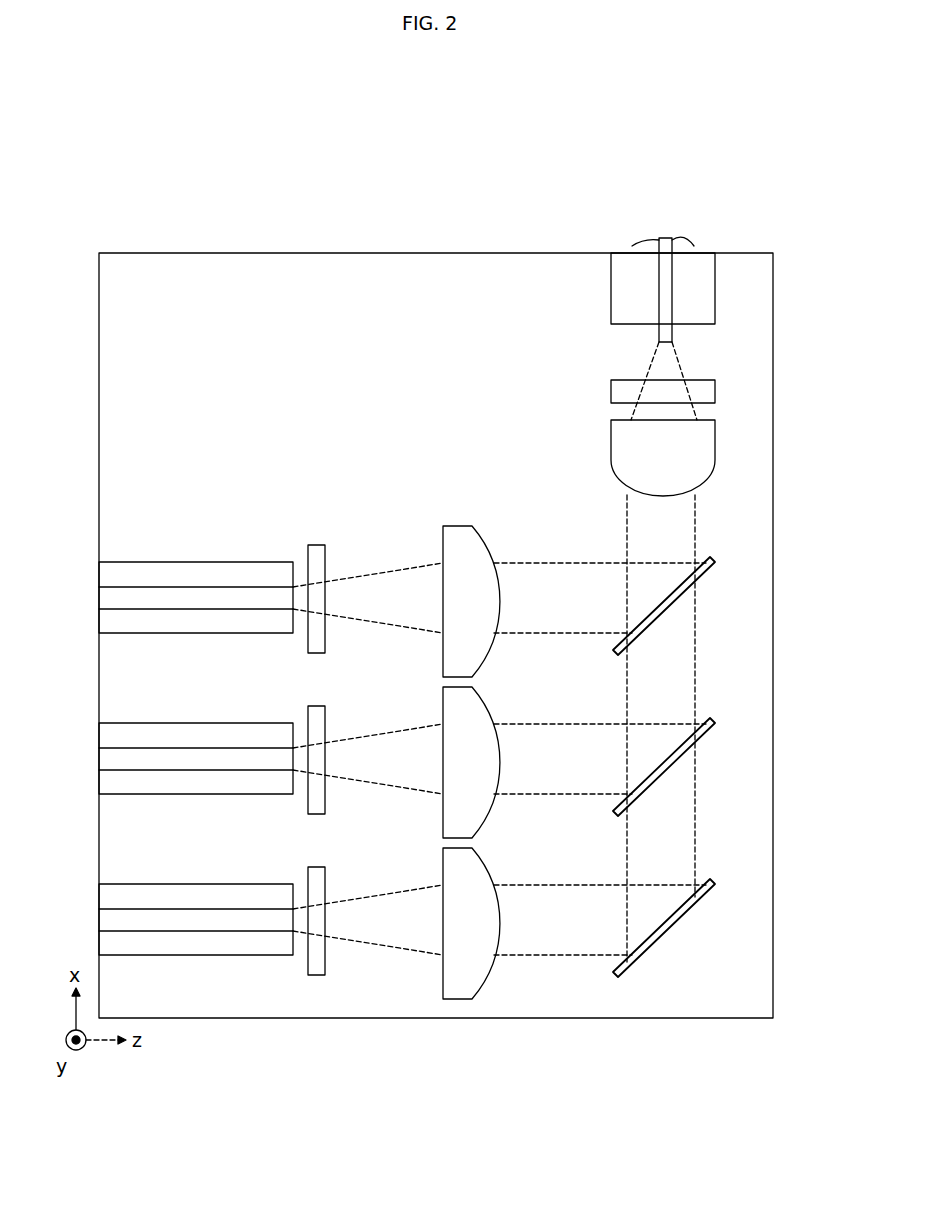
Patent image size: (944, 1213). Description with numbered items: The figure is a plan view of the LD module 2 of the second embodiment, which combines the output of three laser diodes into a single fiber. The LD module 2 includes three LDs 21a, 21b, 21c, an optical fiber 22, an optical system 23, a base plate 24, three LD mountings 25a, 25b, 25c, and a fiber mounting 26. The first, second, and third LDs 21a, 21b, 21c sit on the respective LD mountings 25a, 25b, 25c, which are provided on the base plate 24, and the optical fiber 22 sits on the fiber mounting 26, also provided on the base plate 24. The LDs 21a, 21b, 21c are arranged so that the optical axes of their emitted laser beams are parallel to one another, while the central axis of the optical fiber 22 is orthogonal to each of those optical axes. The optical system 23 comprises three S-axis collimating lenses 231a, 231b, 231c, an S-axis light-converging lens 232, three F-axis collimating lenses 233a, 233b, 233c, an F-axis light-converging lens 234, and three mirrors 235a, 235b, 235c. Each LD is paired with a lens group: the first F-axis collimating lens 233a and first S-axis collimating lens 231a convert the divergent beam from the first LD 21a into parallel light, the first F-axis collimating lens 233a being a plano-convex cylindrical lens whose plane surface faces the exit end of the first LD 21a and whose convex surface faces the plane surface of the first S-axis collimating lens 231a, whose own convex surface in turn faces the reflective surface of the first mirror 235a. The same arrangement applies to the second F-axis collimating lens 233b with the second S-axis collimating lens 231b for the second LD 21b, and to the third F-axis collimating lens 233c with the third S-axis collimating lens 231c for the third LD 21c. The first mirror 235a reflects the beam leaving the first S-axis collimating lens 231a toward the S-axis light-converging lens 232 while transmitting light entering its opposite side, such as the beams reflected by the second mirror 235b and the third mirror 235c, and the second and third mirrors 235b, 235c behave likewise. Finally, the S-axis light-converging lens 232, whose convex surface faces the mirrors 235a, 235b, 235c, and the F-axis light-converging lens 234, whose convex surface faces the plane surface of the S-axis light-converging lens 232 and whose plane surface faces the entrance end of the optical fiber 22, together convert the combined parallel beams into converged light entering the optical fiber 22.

The LD module 2 is at (690, 156).
The first LD 21a is at (180, 584).
The second LD 21b is at (180, 745).
The third LD 21c is at (180, 906).
The optical fiber 22 is at (673, 288).
The optical system 23 is at (453, 484).
The base plate 24 is at (408, 252).
The first LD mounting 25a is at (196, 574).
The second LD mounting 25b is at (196, 735).
The third LD mounting 25c is at (196, 896).
The fiber mounting 26 is at (611, 287).
The first S-axis collimating lens 231a is at (494, 560).
The second S-axis collimating lens 231b is at (494, 721).
The third S-axis collimating lens 231c is at (494, 882).
The S-axis light-converging lens 232 is at (611, 445).
The first F-axis collimating lens 233a is at (316, 545).
The second F-axis collimating lens 233b is at (316, 706).
The third F-axis collimating lens 233c is at (316, 867).
The F-axis light-converging lens 234 is at (715, 391).
The first mirror 235a is at (700, 572).
The second mirror 235b is at (700, 733).
The third mirror 235c is at (700, 894).